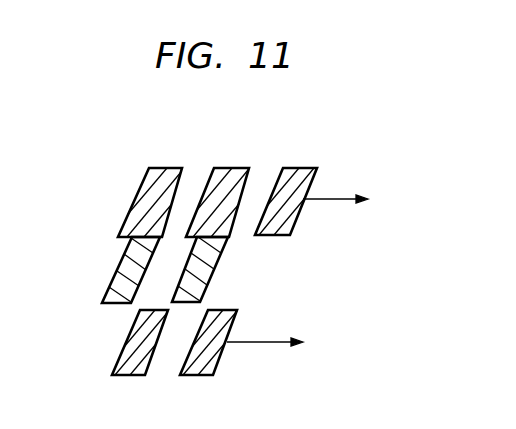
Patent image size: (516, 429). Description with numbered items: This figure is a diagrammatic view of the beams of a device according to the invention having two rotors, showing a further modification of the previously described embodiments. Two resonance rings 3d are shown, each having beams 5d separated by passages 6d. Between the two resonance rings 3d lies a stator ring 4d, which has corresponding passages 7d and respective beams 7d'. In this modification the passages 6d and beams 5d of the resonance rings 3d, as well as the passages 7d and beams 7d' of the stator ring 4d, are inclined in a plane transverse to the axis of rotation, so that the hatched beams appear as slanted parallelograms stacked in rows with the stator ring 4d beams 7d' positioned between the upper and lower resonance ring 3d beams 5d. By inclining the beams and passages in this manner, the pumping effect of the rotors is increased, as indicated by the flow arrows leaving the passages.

The resonance ring 3d is at (157, 161).
The beam 5d is at (235, 172).
The passage 6d is at (252, 208).
The passage 7d is at (159, 292).
The beam 7d' is at (111, 270).
The stator ring 4d is at (88, 289).